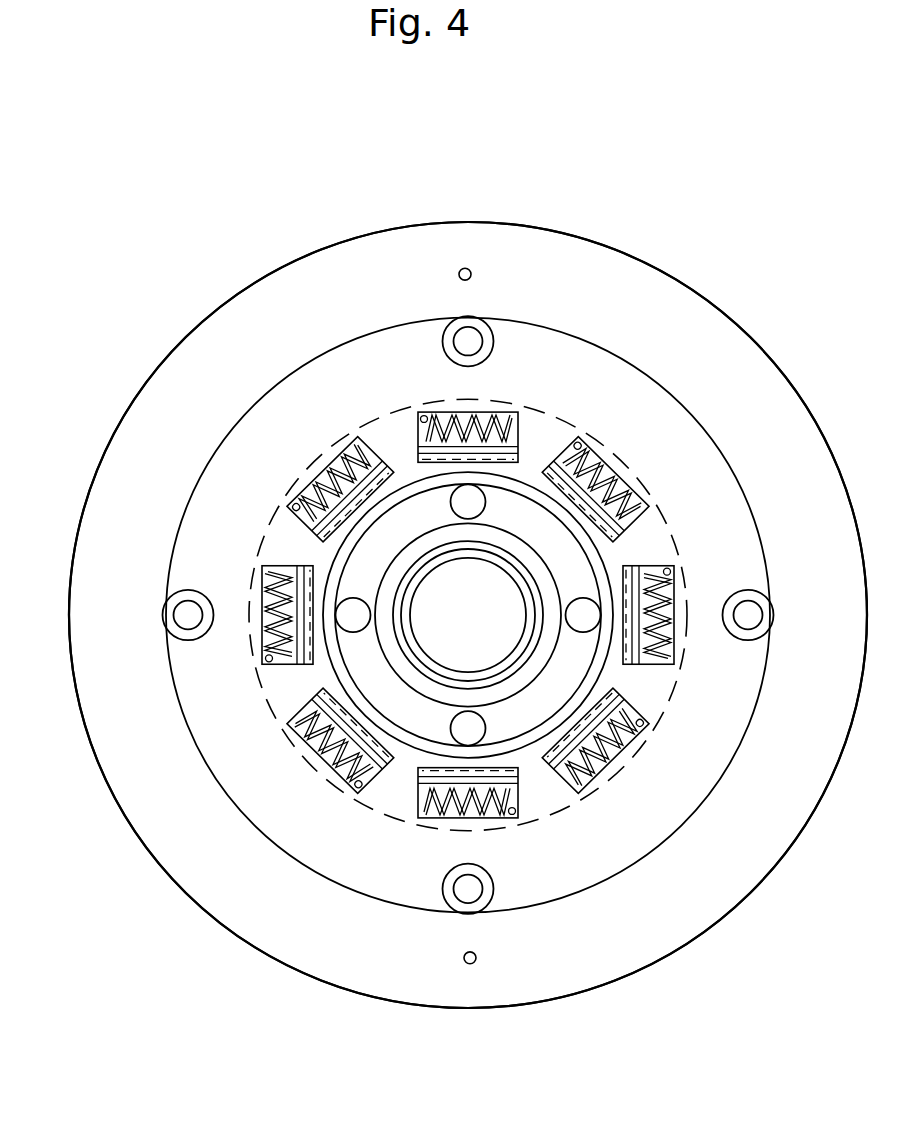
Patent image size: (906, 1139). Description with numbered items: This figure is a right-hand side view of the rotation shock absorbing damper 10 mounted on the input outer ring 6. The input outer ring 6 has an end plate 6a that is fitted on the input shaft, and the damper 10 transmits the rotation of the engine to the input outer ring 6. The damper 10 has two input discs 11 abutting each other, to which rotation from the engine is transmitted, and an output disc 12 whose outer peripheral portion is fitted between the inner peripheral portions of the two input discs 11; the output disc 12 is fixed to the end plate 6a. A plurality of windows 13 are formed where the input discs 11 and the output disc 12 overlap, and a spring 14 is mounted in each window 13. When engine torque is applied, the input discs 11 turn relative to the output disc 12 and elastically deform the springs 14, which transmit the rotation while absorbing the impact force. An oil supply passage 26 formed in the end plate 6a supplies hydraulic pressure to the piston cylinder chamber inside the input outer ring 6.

The input outer ring 6 is at (314, 253).
The end plate 6a is at (383, 252).
The rotation shock absorbing damper 10 is at (266, 386).
The input discs 11 is at (207, 475).
The output disc 12 is at (283, 493).
The windows 13 is at (262, 588).
The spring 14 is at (267, 650).
The oil supply passage 26 is at (461, 266).